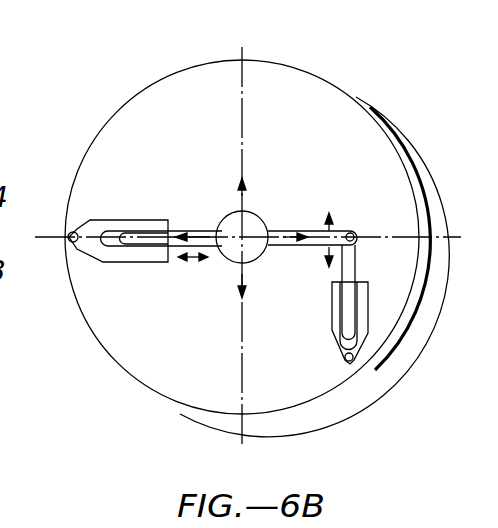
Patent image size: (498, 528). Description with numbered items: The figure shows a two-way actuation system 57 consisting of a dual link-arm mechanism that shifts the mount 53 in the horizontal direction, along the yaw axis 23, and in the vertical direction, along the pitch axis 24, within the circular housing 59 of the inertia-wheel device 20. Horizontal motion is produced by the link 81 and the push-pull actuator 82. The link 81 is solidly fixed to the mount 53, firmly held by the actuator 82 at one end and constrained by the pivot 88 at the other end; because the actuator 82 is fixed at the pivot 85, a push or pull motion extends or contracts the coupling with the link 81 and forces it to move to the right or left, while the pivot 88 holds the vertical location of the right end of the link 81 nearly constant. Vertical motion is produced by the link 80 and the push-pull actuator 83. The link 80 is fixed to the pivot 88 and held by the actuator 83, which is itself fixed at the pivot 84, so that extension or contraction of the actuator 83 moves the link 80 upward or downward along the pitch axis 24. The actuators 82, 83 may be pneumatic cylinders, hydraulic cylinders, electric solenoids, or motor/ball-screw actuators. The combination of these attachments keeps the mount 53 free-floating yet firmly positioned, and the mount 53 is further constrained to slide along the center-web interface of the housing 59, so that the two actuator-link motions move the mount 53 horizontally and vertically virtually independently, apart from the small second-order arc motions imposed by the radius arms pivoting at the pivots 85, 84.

The rotating disc 20 is at (309, 68).
The housing 59 is at (364, 104).
The pitch axis 24 is at (244, 245).
The yaw axis 23 is at (55, 236).
The mount 53 is at (259, 214).
The two-way actuation system 57 is at (239, 272).
The link 81 is at (193, 228).
The push-pull actuator 82 is at (158, 262).
The pivot 85 is at (73, 246).
The pivot 88 is at (350, 232).
The link 80 is at (358, 272).
The push-pull actuator 83 is at (330, 325).
The pivot 84 is at (346, 360).